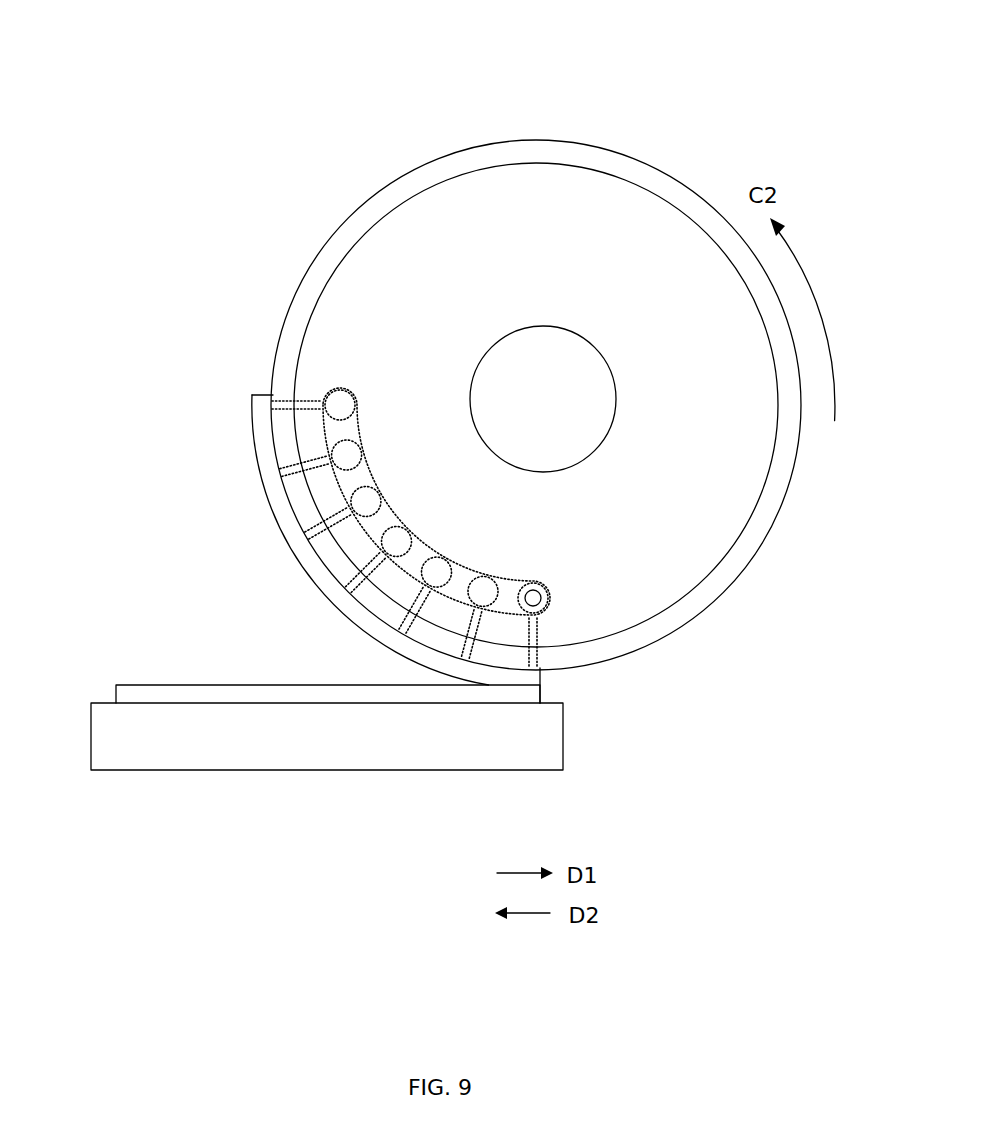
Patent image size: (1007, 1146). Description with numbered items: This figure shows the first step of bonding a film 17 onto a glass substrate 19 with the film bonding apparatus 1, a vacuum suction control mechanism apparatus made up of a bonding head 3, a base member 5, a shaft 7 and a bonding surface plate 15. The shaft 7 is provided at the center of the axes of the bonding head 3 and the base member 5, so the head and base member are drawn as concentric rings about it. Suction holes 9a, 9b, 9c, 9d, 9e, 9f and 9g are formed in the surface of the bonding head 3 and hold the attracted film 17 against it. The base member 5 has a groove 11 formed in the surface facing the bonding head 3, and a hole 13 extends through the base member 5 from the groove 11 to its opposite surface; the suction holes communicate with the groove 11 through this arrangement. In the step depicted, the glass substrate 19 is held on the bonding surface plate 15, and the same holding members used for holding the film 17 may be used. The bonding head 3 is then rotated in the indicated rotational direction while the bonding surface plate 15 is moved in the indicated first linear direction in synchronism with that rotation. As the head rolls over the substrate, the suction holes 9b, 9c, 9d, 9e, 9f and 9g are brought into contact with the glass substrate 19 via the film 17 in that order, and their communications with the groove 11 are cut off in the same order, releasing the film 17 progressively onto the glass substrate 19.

The film bonding apparatus 1 is at (539, 341).
The bonding head 3 is at (635, 173).
The base member 5 is at (670, 230).
The shaft 7 is at (585, 417).
The suction hole 9a is at (540, 600).
The suction hole 9b is at (480, 586).
The suction hole 9c is at (437, 572).
The suction hole 9d is at (396, 543).
The suction hole 9e is at (365, 503).
The suction hole 9f is at (345, 458).
The suction hole 9g is at (339, 405).
The groove 11 is at (400, 527).
The hole 13 is at (534, 600).
The bonding surface plate 15 is at (130, 762).
The film 17 is at (258, 394).
The glass substrate 19 is at (162, 692).